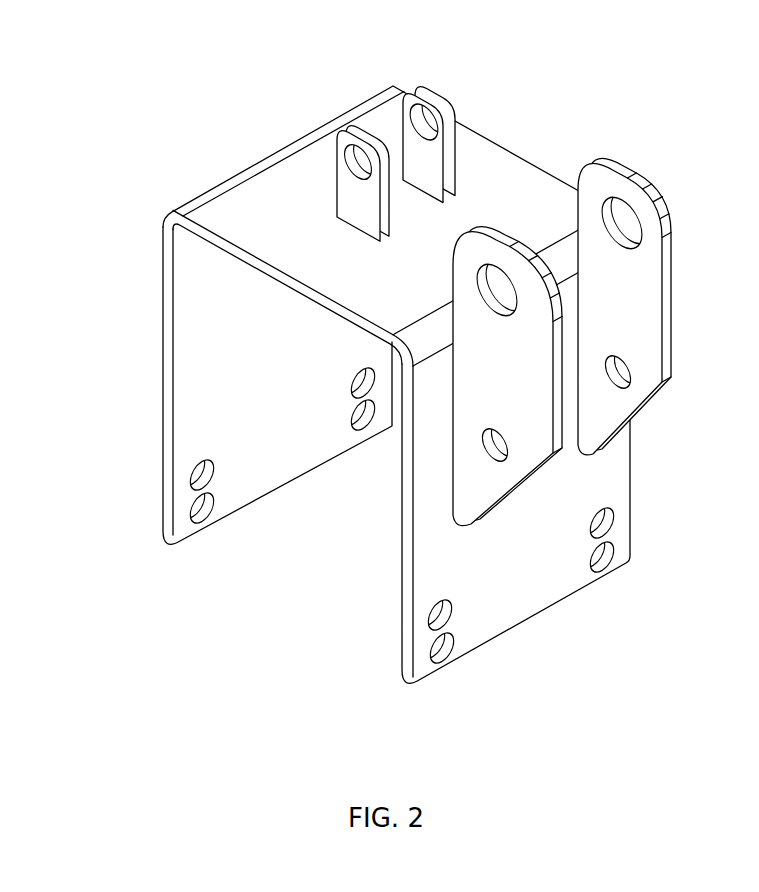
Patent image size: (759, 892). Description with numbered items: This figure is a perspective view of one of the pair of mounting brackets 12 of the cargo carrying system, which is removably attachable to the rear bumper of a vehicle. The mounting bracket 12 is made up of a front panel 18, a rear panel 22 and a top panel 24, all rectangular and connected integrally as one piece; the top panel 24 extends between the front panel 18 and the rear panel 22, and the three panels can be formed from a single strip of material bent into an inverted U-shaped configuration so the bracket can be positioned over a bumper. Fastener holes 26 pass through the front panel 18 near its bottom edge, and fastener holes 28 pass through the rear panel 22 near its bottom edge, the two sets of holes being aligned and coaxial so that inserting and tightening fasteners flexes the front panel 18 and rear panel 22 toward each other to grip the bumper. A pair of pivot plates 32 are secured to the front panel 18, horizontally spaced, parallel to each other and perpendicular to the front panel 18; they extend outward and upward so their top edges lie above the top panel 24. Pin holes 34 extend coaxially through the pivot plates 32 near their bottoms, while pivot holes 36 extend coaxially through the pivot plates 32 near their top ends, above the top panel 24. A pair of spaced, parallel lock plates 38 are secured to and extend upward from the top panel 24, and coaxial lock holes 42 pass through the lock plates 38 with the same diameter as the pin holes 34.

The mounting bracket 12 is at (613, 105).
The front panel 18 is at (520, 476).
The rear panel 22 is at (231, 415).
The top panel 24 is at (260, 203).
The fastener holes 26 is at (423, 640).
The fastener holes 28 is at (201, 525).
The pivot plates 32 is at (542, 347).
The pin holes 34 is at (490, 463).
The pivot holes 36 is at (505, 274).
The lock plates 38 is at (349, 139).
The lock holes 42 is at (352, 142).